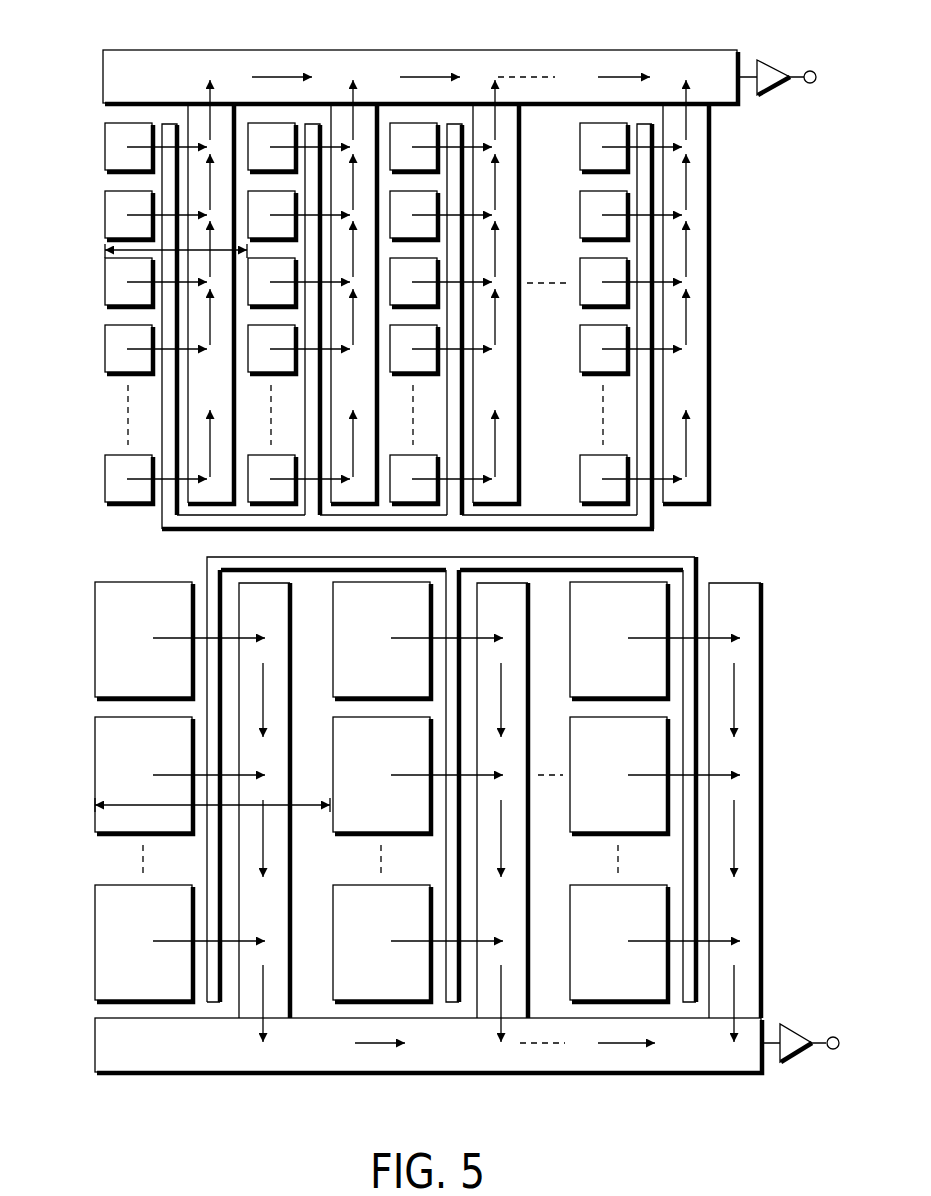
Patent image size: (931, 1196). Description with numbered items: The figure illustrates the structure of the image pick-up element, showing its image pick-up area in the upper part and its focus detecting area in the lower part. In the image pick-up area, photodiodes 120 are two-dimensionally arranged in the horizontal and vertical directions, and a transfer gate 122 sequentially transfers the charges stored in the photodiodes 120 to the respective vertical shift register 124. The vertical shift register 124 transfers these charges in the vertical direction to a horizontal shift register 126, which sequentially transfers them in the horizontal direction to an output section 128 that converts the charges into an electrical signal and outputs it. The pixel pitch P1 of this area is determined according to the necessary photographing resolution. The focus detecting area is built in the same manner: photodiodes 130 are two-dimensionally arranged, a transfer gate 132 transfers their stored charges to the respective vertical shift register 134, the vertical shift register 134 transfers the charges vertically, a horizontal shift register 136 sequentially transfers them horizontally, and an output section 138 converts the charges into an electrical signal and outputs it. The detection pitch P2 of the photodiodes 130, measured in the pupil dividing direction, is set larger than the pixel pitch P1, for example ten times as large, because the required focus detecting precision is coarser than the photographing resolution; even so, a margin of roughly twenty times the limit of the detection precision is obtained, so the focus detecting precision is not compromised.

The photodiodes 120 is at (103, 146).
The transfer gate 122 is at (656, 527).
The vertical shift register 124 is at (710, 298).
The horizontal shift register 126 is at (268, 50).
The output section 128 is at (772, 62).
The pixel pitch P1 is at (137, 249).
The photodiodes 130 is at (95, 640).
The transfer gate 132 is at (207, 558).
The vertical shift register 134 is at (737, 582).
The horizontal shift register 136 is at (408, 1074).
The output section 138 is at (790, 1057).
The detection pitch P2 is at (212, 795).